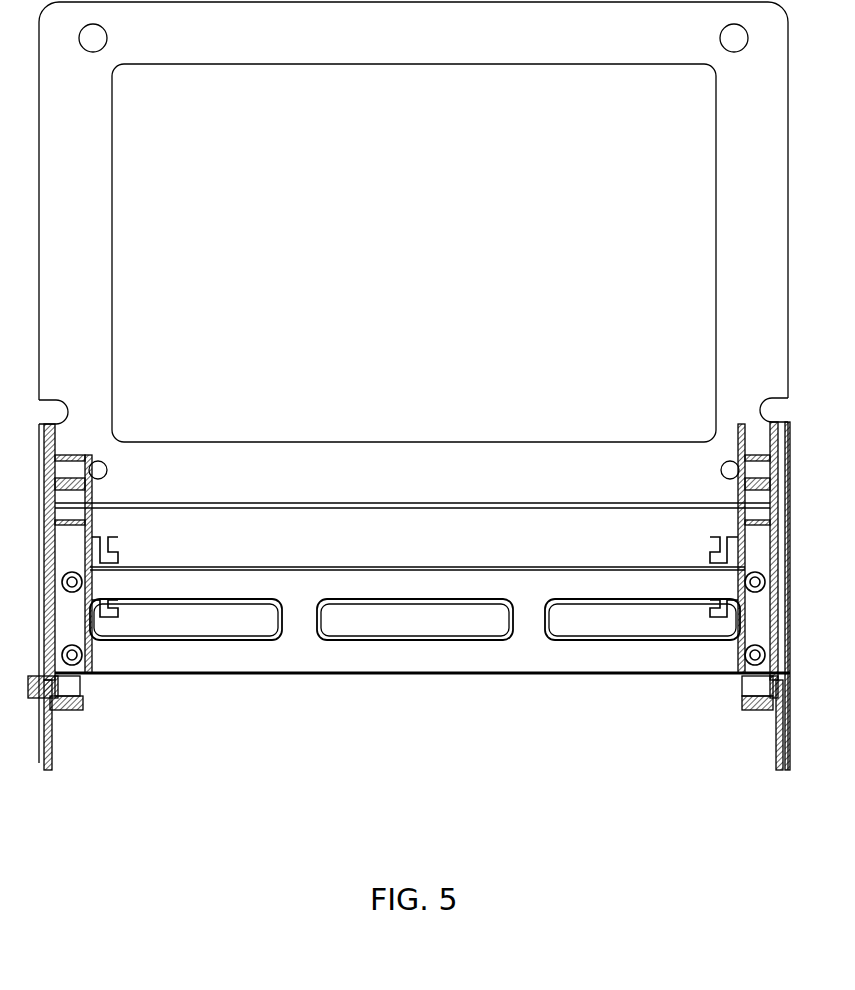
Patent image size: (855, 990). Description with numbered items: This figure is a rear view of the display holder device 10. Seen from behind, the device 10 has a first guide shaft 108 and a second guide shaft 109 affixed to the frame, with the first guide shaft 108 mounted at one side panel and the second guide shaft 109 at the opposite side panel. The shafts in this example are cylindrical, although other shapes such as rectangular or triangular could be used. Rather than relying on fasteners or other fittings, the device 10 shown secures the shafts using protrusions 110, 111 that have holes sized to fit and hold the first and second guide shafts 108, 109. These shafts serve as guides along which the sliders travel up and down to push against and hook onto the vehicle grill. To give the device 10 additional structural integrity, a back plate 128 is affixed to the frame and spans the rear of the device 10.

The display holder device 10 is at (409, 422).
The first guide shaft 108 is at (97, 685).
The second guide shaft 109 is at (753, 683).
The protrusion 110 is at (88, 703).
The protrusion 111 is at (767, 707).
The back plate 128 is at (287, 647).